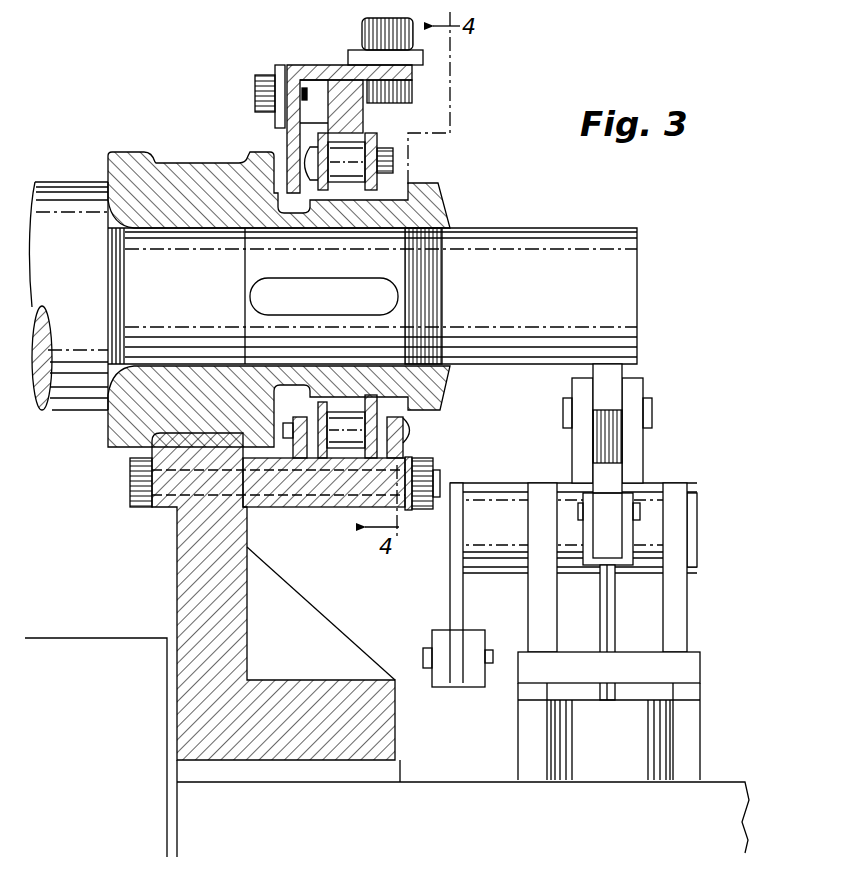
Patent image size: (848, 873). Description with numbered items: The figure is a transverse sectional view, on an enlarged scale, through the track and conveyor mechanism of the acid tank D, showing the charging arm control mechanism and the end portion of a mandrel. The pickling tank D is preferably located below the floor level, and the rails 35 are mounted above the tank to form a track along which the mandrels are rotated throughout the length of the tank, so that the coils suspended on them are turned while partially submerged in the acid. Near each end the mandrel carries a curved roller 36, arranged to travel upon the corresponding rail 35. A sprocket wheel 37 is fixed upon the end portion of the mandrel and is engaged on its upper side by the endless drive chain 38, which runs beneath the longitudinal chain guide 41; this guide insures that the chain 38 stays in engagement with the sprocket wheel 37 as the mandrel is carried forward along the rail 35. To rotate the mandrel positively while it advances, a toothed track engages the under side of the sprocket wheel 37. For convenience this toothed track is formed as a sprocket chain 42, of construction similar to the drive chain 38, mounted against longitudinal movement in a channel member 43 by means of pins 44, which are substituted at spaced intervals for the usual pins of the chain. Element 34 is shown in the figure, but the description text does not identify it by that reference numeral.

The shaft 34 is at (630, 282).
The rail 35 is at (177, 443).
The curved roller 36 is at (192, 170).
The sprocket wheel 37 is at (345, 400).
The endless drive chain 38 is at (382, 144).
The longitudinal chain guide 41 is at (365, 107).
The sprocket chain 42 is at (358, 460).
The channel member 43 is at (407, 456).
The pin 44 is at (409, 430).
The acid tank D is at (105, 653).